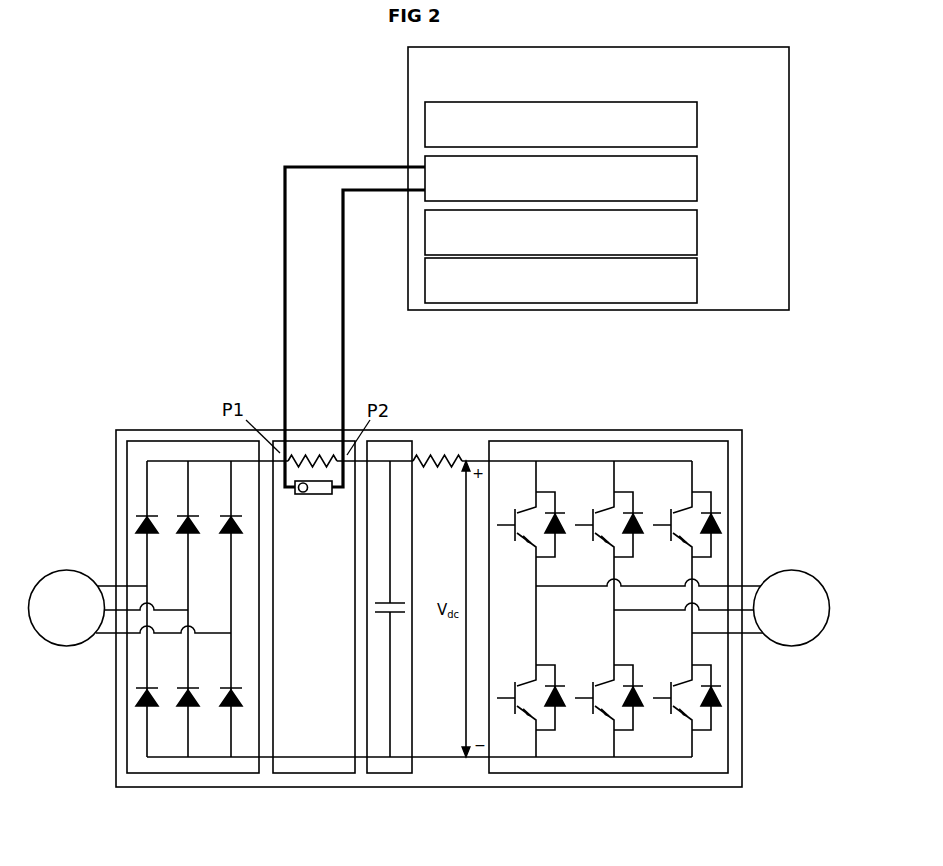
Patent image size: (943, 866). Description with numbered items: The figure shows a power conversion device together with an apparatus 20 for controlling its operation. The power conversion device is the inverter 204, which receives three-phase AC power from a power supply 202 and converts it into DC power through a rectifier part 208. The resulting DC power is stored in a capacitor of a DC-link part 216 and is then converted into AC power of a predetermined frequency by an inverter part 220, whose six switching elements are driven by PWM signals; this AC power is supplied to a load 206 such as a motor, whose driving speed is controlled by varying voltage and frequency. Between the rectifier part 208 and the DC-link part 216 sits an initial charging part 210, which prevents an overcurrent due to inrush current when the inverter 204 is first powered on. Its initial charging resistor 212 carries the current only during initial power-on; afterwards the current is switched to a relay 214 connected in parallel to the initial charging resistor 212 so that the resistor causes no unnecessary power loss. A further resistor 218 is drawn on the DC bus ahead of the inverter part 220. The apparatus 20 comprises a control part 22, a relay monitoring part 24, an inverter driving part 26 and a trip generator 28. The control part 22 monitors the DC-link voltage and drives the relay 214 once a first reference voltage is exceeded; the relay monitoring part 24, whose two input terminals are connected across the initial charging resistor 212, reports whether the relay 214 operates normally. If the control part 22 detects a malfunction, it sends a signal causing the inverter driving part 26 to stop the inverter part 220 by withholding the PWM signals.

The apparatus for controlling the operation of the power conversion device 20 is at (789, 126).
The control part 22 is at (697, 121).
The relay monitoring part 24 is at (697, 175).
The inverter driving part 26 is at (697, 224).
The trip generator 28 is at (697, 275).
The power supply 202 is at (66, 570).
The inverter 204 is at (683, 430).
The load 206 is at (791, 570).
The rectifier part 208 is at (193, 441).
The initial charging part 210 is at (331, 470).
The initial charging resistor 212 is at (318, 455).
The relay 214 is at (314, 497).
The DC-link part 216 is at (396, 442).
The resistor 218 is at (447, 454).
The inverter part 220 is at (605, 441).